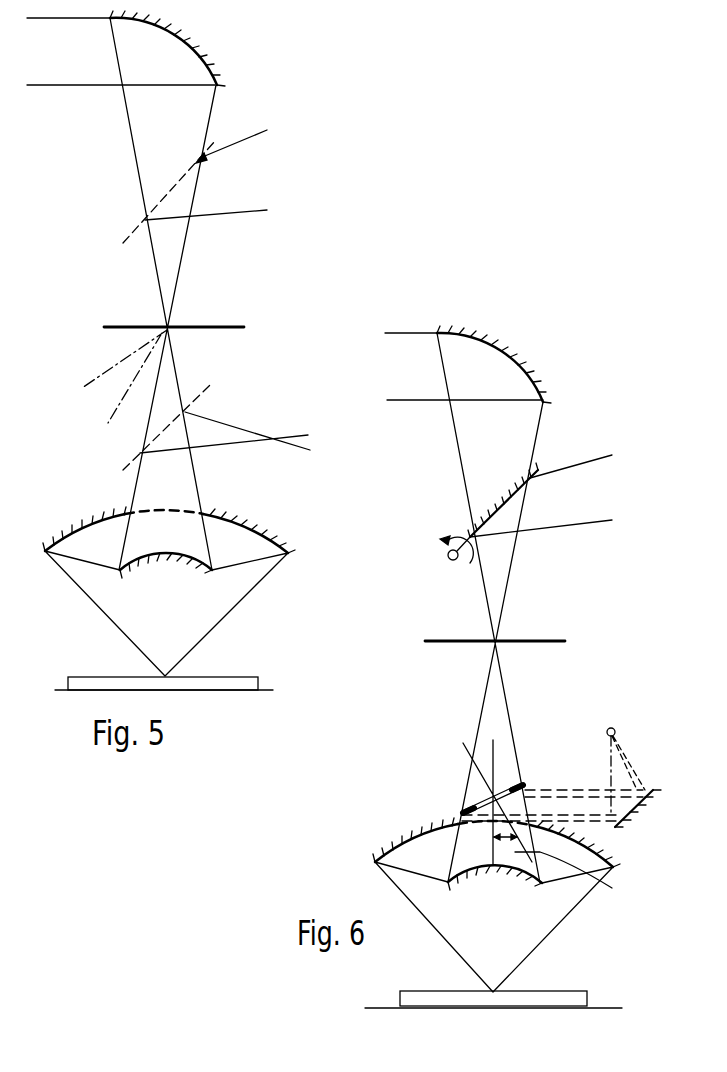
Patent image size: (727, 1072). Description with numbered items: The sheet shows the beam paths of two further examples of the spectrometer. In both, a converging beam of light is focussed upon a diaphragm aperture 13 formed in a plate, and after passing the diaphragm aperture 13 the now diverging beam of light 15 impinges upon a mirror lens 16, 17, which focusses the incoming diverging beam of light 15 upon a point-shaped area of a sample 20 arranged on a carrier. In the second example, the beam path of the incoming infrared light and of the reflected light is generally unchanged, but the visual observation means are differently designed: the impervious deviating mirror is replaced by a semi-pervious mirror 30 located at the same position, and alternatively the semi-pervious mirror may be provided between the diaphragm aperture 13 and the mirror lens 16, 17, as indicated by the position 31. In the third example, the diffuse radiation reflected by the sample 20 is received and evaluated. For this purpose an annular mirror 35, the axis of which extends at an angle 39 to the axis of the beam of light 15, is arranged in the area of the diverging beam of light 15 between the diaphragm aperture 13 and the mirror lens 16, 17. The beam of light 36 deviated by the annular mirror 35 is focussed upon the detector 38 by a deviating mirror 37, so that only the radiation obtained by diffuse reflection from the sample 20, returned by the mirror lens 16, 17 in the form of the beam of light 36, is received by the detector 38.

In FIG. 5, the diaphragm aperture 13 is at (169, 326).
In FIG. 6, the diaphragm aperture 13 is at (499, 631).
In FIG. 6, the diverging beam of light 15 is at (488, 705).
In FIG. 5, the mirror lens 16 is at (162, 558).
In FIG. 6, the mirror lens 16 is at (483, 870).
In FIG. 5, the mirror lens 17 is at (86, 526).
In FIG. 6, the mirror lens 17 is at (407, 848).
In FIG. 6, the sample 20 is at (425, 990).
In FIG. 5, the semi-pervious mirror 30 is at (162, 200).
In FIG. 6, the semi-pervious mirror 30 is at (526, 509).
In FIG. 5, the semi-pervious mirror 31 is at (187, 405).
In FIG. 6, the annular mirror 35 is at (482, 800).
In FIG. 6, the beam of light 36 is at (565, 802).
In FIG. 6, the deviating mirror 37 is at (633, 812).
In FIG. 6, the detector 38 is at (611, 728).
In FIG. 6, the angle 39 is at (576, 878).